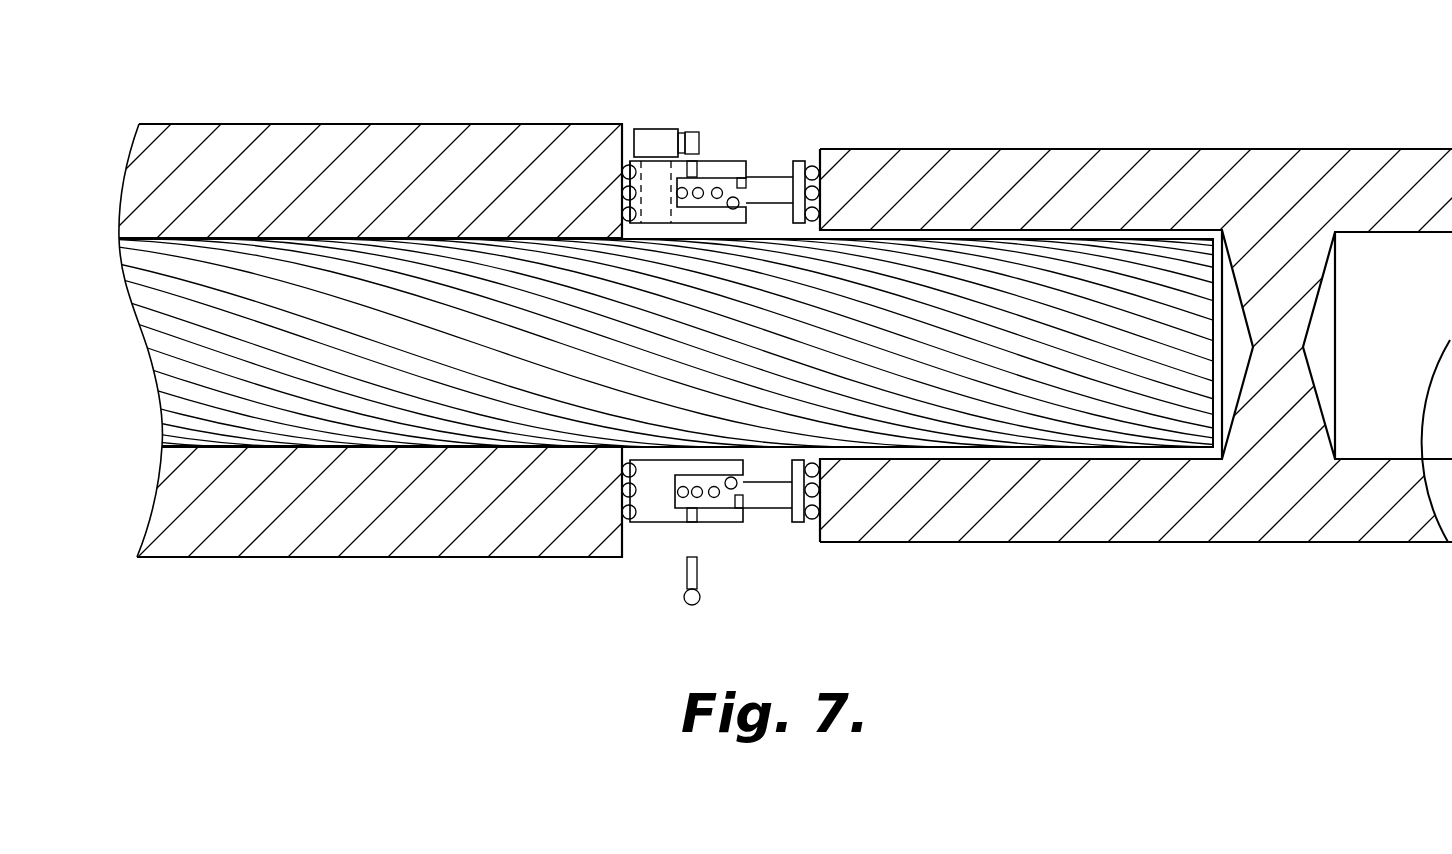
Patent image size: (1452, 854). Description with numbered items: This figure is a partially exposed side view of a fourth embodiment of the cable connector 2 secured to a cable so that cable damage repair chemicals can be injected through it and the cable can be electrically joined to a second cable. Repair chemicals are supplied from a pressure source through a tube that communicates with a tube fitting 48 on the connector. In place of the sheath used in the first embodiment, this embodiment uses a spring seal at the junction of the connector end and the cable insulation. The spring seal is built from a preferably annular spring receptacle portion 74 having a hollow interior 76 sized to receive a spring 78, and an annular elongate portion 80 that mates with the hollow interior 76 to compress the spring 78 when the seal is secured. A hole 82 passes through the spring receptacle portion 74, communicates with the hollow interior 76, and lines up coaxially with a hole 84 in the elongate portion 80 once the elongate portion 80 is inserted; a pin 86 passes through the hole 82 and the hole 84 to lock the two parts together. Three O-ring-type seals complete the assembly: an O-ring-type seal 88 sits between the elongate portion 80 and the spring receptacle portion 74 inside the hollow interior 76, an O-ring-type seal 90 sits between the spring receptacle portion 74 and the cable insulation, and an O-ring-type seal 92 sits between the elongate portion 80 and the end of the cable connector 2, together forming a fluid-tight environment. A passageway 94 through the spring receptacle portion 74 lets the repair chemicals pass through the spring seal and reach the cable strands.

The cable connector 2 is at (1285, 125).
The tube fitting 48 is at (667, 130).
The spring receptacle portion 74 is at (653, 518).
The hollow interior 76 is at (735, 197).
The spring 78 is at (700, 187).
The annular elongate portion 80 is at (783, 498).
The hole 82 is at (685, 516).
The hole 84 is at (746, 504).
The pin 86 is at (683, 602).
The O-ring-type seal 88 is at (742, 200).
The O-ring-type seal 90 is at (623, 170).
The O-ring-type seal 92 is at (819, 170).
The passageway 94 is at (657, 170).